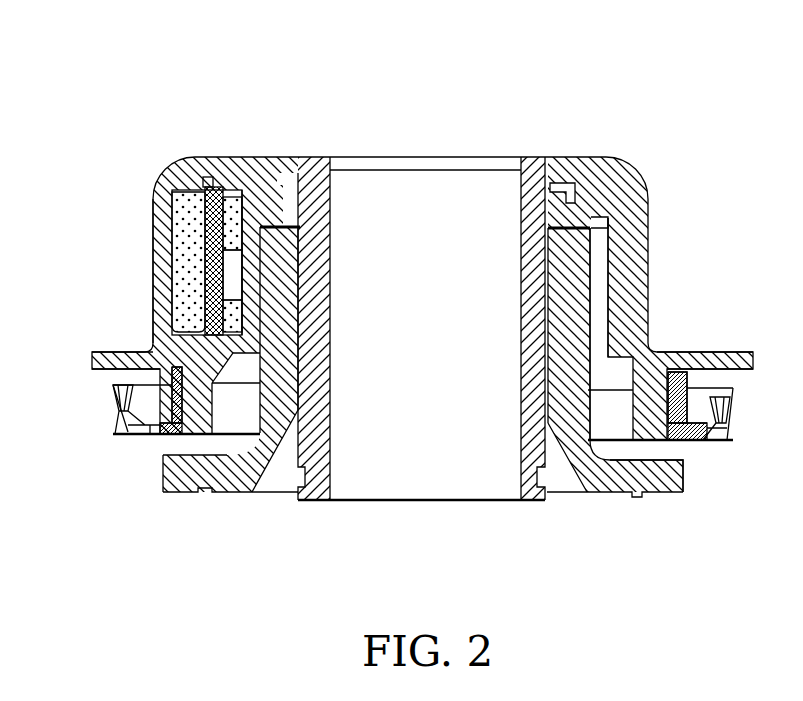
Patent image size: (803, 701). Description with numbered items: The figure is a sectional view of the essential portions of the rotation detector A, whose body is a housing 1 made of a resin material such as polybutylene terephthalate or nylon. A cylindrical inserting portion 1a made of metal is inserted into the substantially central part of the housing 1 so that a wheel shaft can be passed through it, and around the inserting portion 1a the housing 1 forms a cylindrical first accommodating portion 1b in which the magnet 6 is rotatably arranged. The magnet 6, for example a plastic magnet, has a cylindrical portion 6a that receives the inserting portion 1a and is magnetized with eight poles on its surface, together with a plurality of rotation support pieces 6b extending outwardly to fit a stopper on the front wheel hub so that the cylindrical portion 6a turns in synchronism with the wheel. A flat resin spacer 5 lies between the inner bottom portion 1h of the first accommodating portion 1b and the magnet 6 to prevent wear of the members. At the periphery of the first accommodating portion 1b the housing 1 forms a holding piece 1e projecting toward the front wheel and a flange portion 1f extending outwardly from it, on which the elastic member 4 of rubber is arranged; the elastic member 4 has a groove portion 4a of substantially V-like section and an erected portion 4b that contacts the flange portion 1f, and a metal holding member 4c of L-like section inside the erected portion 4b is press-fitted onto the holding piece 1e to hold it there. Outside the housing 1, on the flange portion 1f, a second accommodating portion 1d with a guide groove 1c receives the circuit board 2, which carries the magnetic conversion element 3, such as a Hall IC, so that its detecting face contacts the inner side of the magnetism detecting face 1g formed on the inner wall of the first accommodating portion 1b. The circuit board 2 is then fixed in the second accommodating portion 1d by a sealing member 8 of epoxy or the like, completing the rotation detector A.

The housing 1 is at (628, 192).
The inserting portion 1a is at (550, 168).
The first accommodating portion 1b is at (603, 283).
The guide groove 1c is at (219, 183).
The second accommodating portion 1d is at (168, 223).
The holding piece 1e is at (180, 432).
The flange portion 1f is at (713, 362).
The magnetism detecting face 1g is at (250, 275).
The inner bottom portion 1h is at (578, 226).
The circuit board 2 is at (203, 240).
The magnetic conversion element 3 is at (228, 283).
The elastic member 4 is at (220, 425).
The groove portion 4a is at (710, 417).
The erected portion 4b is at (690, 380).
The holding member 4c is at (720, 443).
The spacer 5 is at (290, 227).
The magnet 6 is at (569, 481).
The cylindrical portion 6a is at (580, 303).
The rotation support pieces 6b is at (673, 473).
The sealing member 8 is at (180, 197).
The rotation detector A is at (666, 92).